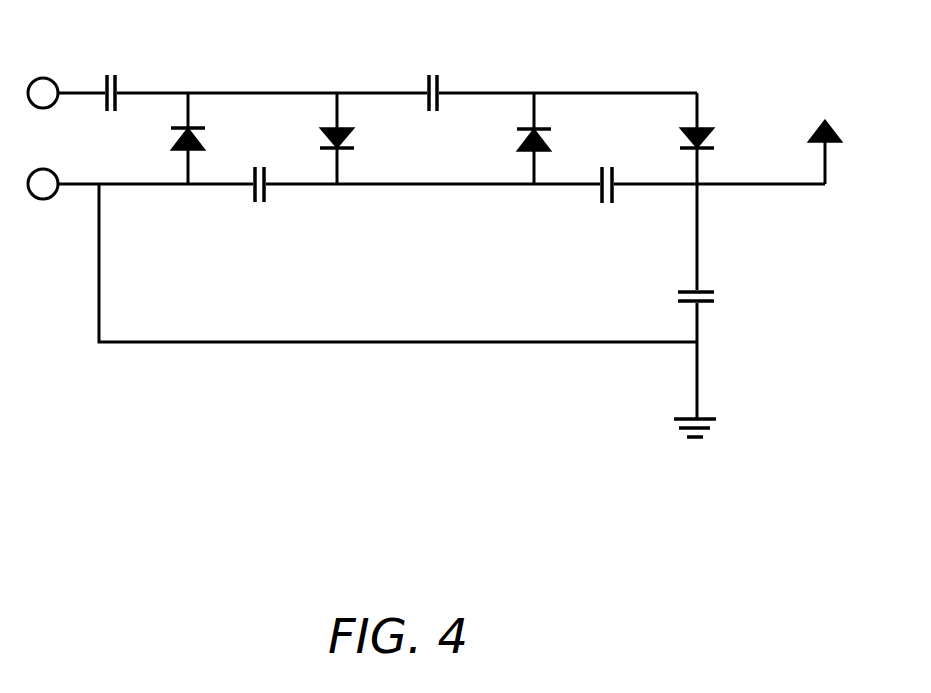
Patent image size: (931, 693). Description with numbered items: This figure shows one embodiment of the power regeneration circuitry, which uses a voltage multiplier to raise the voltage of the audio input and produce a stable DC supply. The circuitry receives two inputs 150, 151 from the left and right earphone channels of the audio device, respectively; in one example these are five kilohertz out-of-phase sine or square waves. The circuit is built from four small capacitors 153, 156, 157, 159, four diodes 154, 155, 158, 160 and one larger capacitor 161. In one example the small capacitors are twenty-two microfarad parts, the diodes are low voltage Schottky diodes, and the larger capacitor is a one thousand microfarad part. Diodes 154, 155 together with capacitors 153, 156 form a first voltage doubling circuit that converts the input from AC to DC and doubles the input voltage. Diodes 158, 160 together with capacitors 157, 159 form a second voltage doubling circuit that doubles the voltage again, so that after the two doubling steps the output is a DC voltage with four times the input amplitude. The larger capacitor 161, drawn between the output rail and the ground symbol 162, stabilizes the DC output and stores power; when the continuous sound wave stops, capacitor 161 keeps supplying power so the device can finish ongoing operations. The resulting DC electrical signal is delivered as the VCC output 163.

The input 150 is at (50, 94).
The input 151 is at (47, 188).
The small capacitor 153 is at (120, 85).
The diode 154 is at (206, 148).
The diode 155 is at (352, 135).
The small capacitor 156 is at (268, 188).
The small capacitor 157 is at (438, 92).
The diode 158 is at (530, 160).
The small capacitor 159 is at (600, 192).
The diode 160 is at (682, 137).
The larger capacitor 161 is at (690, 292).
The ground 162 is at (702, 420).
The DC electrical signal (VCC output) 163 is at (810, 148).